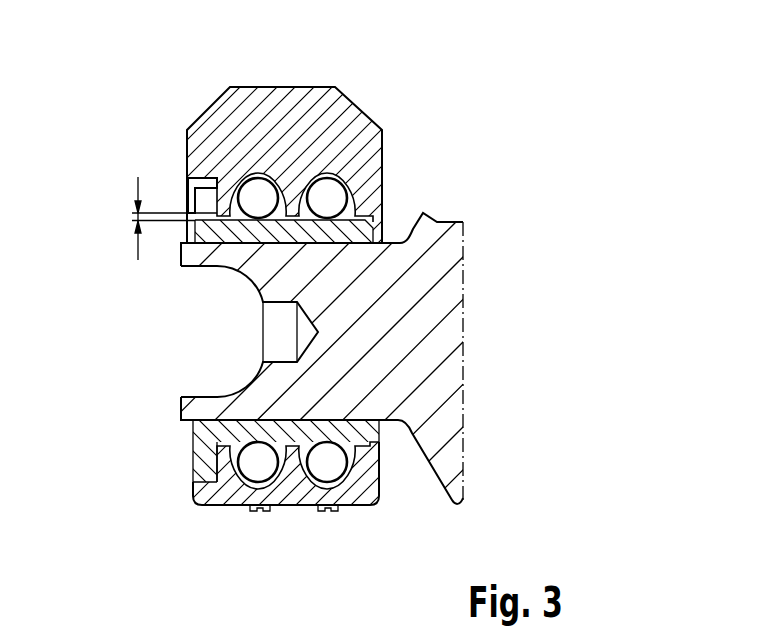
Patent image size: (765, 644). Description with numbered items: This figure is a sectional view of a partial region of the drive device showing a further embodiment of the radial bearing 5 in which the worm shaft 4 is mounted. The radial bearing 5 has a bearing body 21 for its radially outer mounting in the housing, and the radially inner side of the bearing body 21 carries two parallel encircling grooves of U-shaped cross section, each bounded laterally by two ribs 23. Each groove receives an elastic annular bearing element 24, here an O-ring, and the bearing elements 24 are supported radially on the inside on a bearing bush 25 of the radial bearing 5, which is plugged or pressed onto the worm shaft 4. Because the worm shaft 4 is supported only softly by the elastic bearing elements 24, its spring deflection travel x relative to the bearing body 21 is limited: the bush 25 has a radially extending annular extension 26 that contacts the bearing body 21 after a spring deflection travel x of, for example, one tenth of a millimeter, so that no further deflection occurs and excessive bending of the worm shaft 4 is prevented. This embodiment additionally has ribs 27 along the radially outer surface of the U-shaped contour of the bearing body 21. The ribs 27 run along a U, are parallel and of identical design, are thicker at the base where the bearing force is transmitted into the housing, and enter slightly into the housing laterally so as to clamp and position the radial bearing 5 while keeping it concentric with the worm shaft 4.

The worm shaft 4 is at (452, 375).
The radial bearing 5 is at (159, 101).
The bearing body 21 is at (378, 153).
The ribs 23 is at (230, 203).
The elastic annular bearing element 24 is at (262, 200).
The bearing bush 25 is at (225, 432).
The annular extension 26 is at (190, 200).
The ribs 27 is at (256, 512).
The spring deflection travel x is at (132, 218).